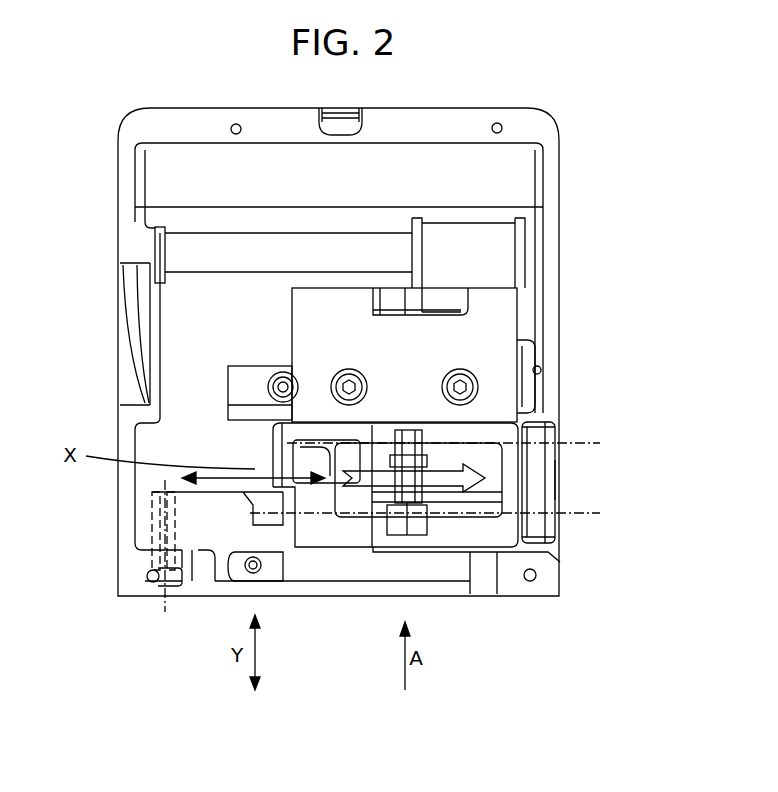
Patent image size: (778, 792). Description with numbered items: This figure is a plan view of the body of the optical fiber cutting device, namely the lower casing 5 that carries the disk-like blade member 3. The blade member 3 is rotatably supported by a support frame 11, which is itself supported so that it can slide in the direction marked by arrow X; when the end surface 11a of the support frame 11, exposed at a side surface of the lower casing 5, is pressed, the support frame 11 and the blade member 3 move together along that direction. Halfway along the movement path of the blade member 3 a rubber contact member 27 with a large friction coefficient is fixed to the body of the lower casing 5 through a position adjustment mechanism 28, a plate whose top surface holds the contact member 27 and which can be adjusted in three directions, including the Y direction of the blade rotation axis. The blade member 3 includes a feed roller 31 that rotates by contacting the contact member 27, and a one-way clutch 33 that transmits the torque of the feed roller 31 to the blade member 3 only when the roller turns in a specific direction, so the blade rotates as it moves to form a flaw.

The lower casing 5 is at (558, 265).
The disk-like blade member 3 is at (443, 470).
The support frame 11 is at (538, 450).
The end surface 11a is at (552, 478).
The contact member 27 is at (268, 525).
The position adjustment mechanism 28 is at (208, 530).
The feed roller 31 is at (359, 508).
The one-way clutch 33 is at (433, 515).